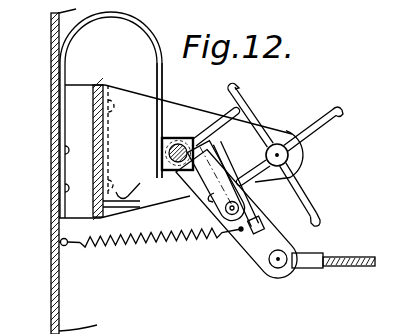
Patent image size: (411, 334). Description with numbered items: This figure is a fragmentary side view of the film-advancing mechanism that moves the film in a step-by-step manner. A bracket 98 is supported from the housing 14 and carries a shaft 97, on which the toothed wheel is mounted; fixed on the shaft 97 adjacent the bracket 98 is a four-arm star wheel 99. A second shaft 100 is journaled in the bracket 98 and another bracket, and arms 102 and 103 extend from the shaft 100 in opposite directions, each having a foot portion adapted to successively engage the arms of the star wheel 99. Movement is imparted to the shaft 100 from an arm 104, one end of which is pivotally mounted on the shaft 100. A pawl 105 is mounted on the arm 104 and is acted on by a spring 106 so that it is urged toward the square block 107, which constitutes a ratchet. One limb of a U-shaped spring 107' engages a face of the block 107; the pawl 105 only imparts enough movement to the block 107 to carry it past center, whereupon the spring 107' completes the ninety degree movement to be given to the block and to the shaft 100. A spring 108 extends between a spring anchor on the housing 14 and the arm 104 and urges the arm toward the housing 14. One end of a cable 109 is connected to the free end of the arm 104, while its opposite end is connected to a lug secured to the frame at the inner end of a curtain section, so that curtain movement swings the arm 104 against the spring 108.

The housing 14 is at (52, 262).
The shaft 97 is at (277, 152).
The bracket 98 is at (174, 103).
The four-arm star wheel 99 is at (315, 133).
The shaft 100 is at (164, 153).
The arm 102 is at (212, 113).
The arm 103 is at (140, 183).
The arm 104 is at (247, 250).
The pawl 105 is at (208, 197).
The spring 106 is at (221, 172).
The square block 107 is at (182, 120).
The U-shaped spring 107' is at (111, 115).
The spring 108 is at (150, 241).
The cable 109 is at (348, 246).